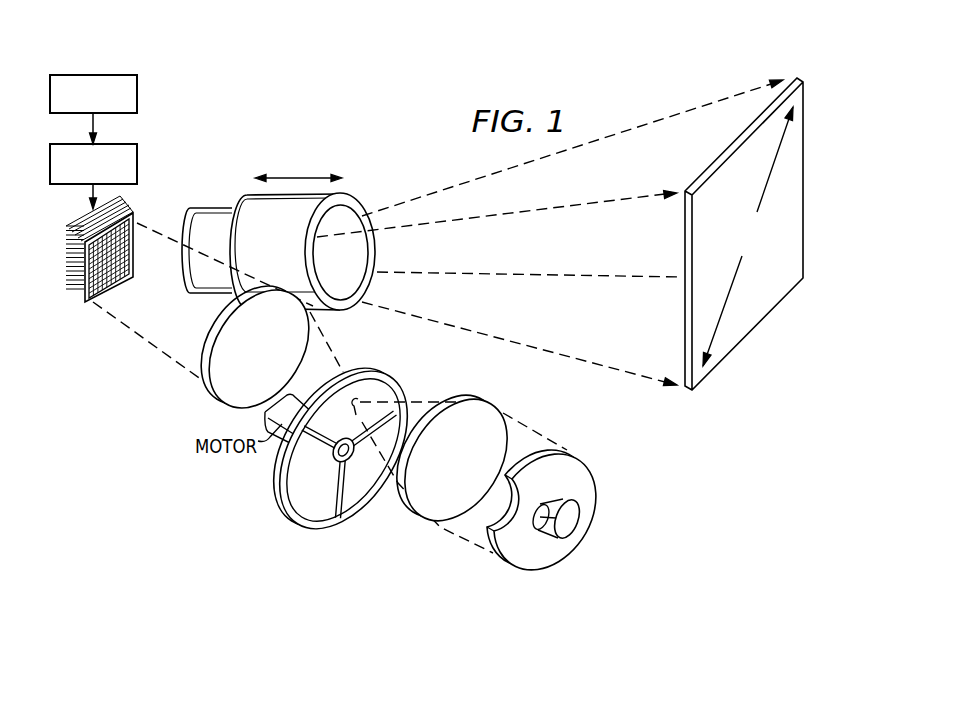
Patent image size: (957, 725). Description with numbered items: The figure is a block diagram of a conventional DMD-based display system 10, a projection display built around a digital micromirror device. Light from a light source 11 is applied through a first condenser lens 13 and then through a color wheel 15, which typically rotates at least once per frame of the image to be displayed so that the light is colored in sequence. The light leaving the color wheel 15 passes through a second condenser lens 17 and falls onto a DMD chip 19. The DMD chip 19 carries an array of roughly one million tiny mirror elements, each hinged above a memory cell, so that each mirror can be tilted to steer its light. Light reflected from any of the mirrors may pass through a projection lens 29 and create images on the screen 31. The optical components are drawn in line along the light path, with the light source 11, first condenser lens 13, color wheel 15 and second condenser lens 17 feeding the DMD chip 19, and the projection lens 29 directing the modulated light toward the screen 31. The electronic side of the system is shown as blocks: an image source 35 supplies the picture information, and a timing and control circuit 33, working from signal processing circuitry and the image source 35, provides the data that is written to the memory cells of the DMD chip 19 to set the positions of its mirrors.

The DMD system 10 is at (663, 465).
The light source 11 is at (555, 547).
The first condenser lens 13 is at (460, 507).
The color wheel 15 is at (303, 517).
The second condenser lens 17 is at (207, 373).
The DMD chip 19 is at (83, 304).
The projection lens 29 is at (240, 257).
The screen 31 is at (750, 322).
The timing and control circuit 33 is at (138, 166).
The image source 35 is at (138, 95).